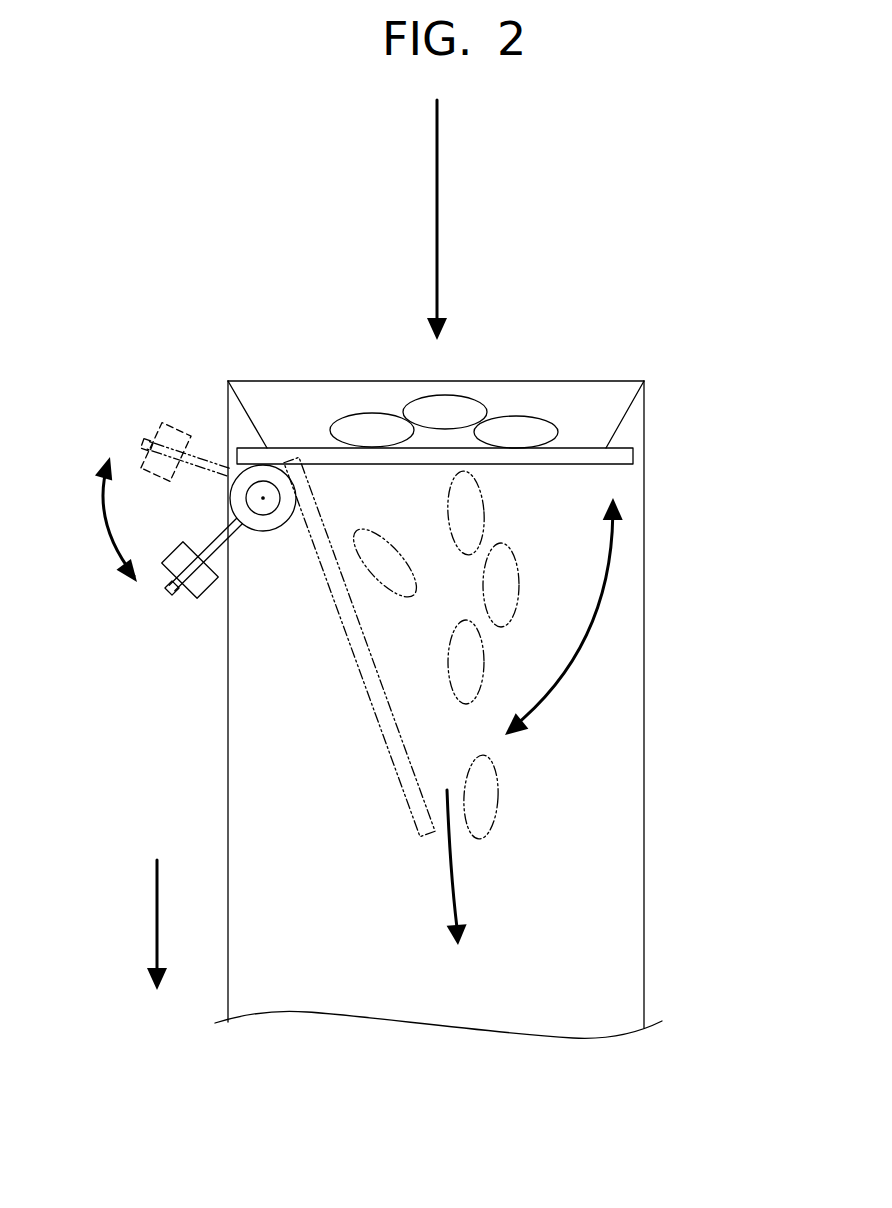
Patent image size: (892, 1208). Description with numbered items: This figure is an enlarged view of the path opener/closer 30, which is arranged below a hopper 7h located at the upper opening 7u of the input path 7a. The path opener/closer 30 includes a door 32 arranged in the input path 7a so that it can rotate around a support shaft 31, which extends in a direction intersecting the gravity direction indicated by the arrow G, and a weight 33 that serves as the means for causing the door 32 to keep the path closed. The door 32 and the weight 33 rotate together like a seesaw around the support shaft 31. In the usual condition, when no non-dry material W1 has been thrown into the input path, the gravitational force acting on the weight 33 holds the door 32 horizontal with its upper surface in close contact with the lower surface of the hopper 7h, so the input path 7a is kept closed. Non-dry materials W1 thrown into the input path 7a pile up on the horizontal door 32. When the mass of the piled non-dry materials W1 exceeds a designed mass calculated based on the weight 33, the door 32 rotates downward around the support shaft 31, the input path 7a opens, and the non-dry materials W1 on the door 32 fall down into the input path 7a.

The input path 7a is at (656, 720).
The upper opening 7u is at (565, 381).
The hopper 7h is at (267, 415).
The non-dry material W1 is at (370, 425).
The path opener/closer 30 is at (430, 591).
The support shaft 31 is at (258, 500).
The door 32 is at (630, 457).
The weight 33 is at (160, 428).
The gravity direction G is at (152, 914).